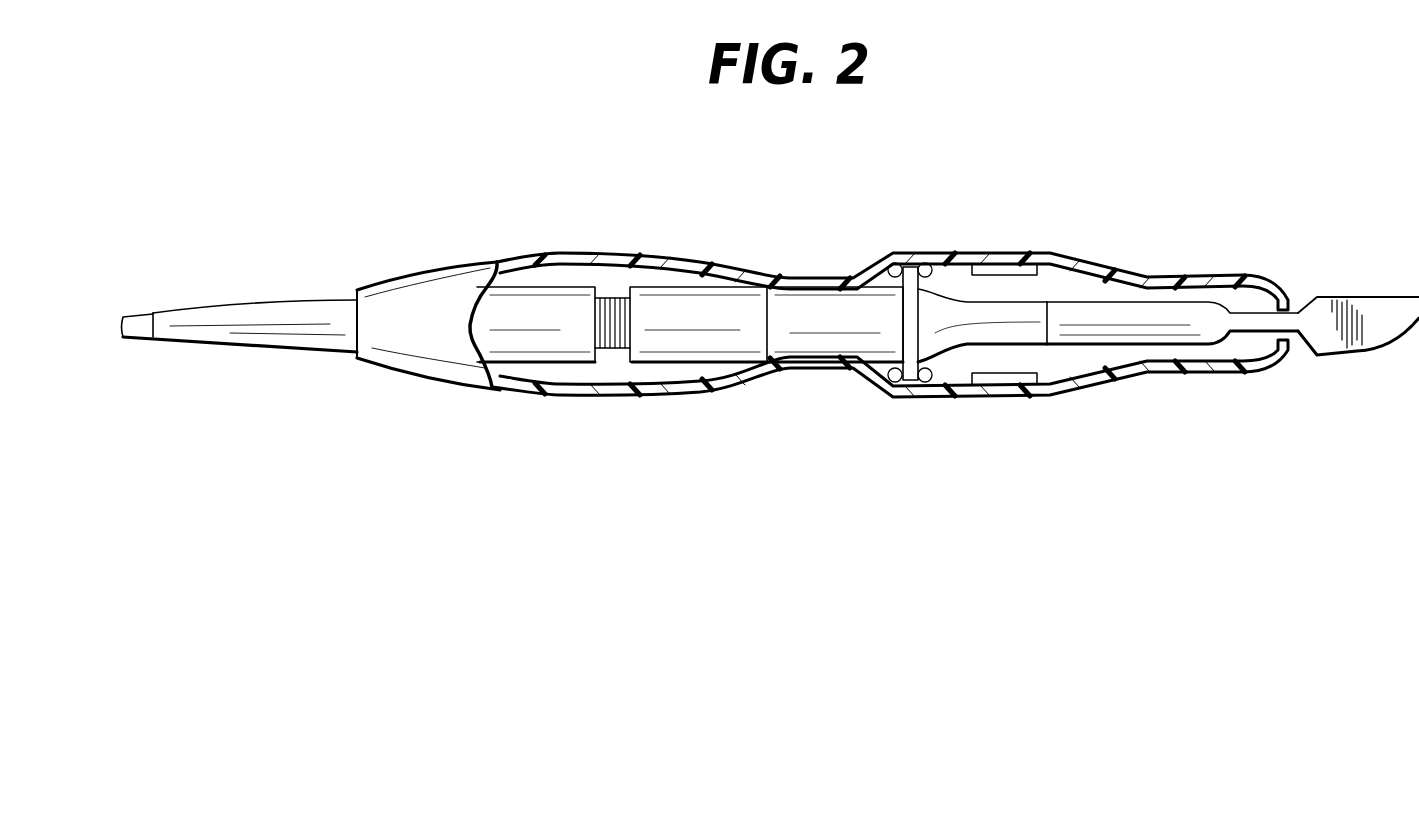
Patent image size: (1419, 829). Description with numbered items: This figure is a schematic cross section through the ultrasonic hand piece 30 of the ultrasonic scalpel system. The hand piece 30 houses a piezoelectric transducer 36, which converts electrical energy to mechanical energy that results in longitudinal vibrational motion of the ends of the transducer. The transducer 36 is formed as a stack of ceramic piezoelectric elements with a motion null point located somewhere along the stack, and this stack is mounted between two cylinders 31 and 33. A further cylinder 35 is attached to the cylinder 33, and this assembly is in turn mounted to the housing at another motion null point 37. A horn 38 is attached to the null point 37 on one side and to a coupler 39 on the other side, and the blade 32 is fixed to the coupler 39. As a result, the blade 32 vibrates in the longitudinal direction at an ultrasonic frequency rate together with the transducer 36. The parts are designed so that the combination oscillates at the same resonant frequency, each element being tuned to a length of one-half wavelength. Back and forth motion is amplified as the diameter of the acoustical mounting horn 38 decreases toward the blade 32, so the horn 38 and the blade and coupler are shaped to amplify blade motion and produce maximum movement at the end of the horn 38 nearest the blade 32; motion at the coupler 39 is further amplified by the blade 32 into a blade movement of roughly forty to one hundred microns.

The ultrasonic hand piece 30 is at (782, 258).
The cylinder 31 is at (520, 303).
The blade 32 is at (1368, 315).
The cylinder 33 is at (694, 340).
The cylinder 35 is at (817, 340).
The piezoelectric transducer 36 is at (607, 297).
The motion null point 37 is at (917, 263).
The horn 38 is at (957, 312).
The coupler 39 is at (1132, 318).